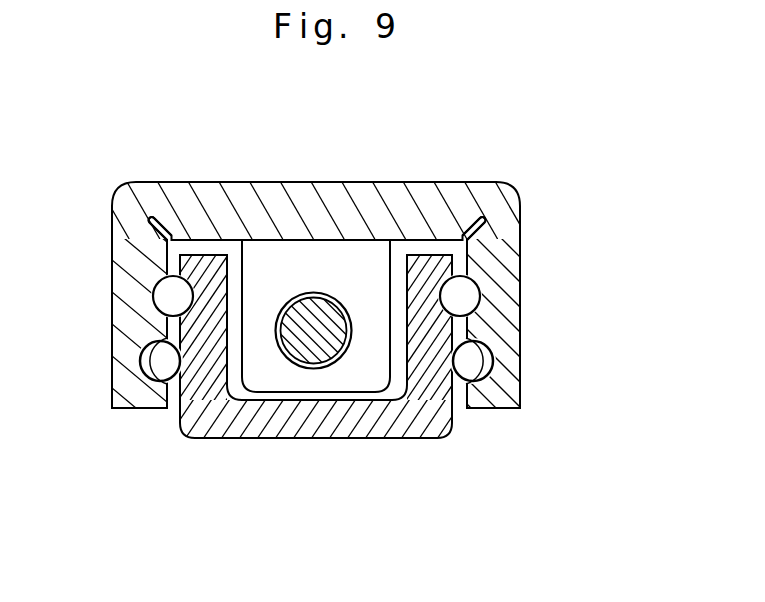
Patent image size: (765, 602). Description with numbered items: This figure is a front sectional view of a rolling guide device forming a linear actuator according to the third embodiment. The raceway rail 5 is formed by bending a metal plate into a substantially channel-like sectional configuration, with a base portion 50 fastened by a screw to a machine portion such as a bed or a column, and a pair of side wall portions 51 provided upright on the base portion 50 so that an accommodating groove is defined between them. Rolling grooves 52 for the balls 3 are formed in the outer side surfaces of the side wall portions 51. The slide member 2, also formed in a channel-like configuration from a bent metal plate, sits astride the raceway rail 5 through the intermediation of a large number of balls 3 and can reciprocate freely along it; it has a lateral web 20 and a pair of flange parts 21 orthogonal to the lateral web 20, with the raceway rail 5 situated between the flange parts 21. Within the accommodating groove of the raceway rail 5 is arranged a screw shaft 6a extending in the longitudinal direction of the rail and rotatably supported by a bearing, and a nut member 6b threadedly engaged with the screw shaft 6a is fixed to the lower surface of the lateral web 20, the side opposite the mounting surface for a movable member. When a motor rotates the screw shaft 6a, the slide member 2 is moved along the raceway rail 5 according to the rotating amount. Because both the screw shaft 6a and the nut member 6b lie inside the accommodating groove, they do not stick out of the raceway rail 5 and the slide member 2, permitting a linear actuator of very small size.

The slide member 2 is at (382, 172).
The lateral web 20 is at (317, 212).
The flange parts 21 is at (138, 400).
The rolling grooves 52 is at (177, 276).
The balls 3 is at (170, 304).
The raceway rail 5 is at (310, 389).
The base portion 50 is at (233, 432).
The side wall portions 51 is at (228, 292).
The screw shaft 6a is at (313, 352).
The nut member 6b is at (360, 380).